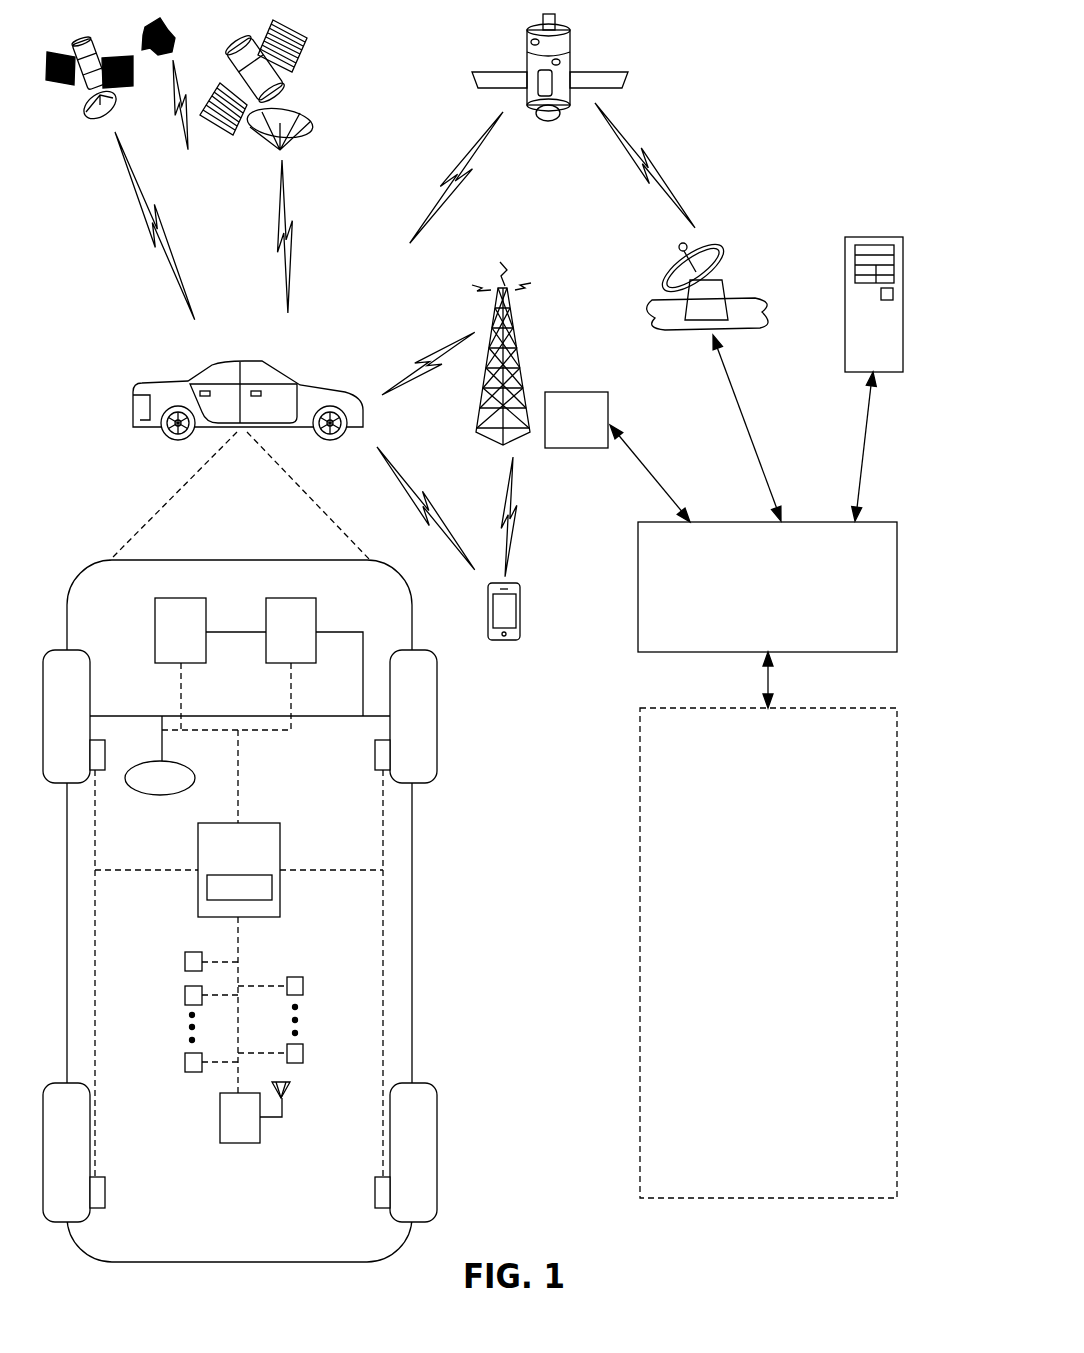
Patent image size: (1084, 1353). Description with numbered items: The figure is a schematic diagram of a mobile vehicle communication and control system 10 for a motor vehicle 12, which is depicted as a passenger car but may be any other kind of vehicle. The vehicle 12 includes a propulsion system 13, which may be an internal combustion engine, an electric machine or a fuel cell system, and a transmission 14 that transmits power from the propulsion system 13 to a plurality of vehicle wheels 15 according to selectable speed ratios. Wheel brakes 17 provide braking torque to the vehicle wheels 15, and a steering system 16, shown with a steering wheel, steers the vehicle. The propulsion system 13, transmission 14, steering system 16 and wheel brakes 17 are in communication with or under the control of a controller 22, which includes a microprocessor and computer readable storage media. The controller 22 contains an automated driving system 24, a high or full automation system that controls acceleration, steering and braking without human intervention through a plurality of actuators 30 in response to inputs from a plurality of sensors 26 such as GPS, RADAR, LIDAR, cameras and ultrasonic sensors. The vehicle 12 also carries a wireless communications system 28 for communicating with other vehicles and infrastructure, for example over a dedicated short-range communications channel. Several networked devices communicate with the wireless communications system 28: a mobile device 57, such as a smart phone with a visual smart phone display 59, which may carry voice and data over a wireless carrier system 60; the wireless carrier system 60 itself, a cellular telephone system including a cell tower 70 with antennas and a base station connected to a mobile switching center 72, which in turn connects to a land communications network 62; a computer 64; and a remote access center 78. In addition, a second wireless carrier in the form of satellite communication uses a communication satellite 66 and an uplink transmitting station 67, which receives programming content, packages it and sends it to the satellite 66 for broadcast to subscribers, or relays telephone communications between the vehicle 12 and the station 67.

The mobile vehicle communication and control system 10 is at (805, 128).
The motor vehicle 12 is at (137, 405).
The propulsion system 13 is at (155, 632).
The transmission 14 is at (316, 620).
The vehicle wheels 15 is at (78, 680).
The steering system 16 is at (160, 796).
The wheel brakes 17 is at (96, 770).
The controller 22 is at (280, 878).
The automated driving system 24 is at (255, 900).
The sensors 26 is at (183, 963).
The wireless communications system 28 is at (240, 1143).
The actuators 30 is at (303, 983).
The mobile device 57 is at (520, 625).
The visual smart phone display 59 is at (508, 608).
The wireless carrier system 60 is at (494, 456).
The land communications network 62 is at (897, 583).
The computer 64 is at (903, 295).
The communication satellite 66 is at (572, 45).
The uplink transmitting station 67 is at (740, 297).
The cell tower 70 is at (520, 345).
The mobile switching center 72 is at (575, 452).
The remote access center 78 is at (775, 1200).